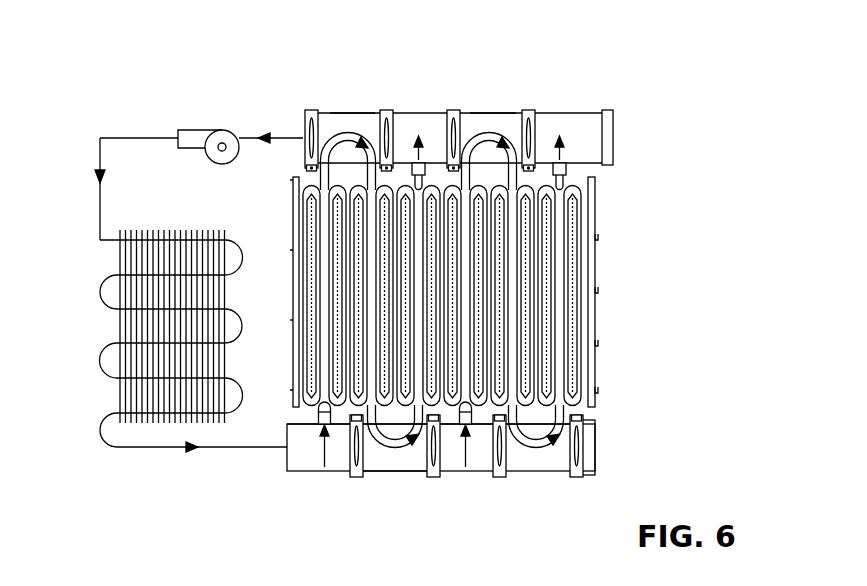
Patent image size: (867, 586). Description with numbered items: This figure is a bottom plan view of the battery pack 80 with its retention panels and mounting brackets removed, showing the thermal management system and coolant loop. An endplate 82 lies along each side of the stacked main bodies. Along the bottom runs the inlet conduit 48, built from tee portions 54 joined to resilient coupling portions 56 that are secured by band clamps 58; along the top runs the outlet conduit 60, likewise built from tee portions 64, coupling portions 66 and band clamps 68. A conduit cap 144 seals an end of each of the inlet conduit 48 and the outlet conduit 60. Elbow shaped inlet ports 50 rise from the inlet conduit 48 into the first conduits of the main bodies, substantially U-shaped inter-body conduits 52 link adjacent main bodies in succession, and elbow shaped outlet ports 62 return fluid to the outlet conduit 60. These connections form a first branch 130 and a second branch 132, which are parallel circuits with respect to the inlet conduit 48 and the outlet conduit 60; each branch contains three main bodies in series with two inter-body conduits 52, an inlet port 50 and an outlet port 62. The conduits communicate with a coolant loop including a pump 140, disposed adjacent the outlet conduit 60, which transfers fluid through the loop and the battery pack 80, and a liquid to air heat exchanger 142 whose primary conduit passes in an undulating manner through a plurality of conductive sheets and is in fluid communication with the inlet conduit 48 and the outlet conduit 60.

The inlet conduit 48 is at (292, 455).
The inlet port 50 is at (318, 408).
The inter-body conduit 52 is at (345, 140).
The tee portion 54 is at (316, 472).
The coupling portion 56 is at (406, 472).
The band clamp 58 is at (355, 477).
The outlet conduit 60 is at (592, 117).
The outlet port 62 is at (412, 164).
The tee portion 64 is at (388, 110).
The coupling portion 66 is at (362, 113).
The band clamp 68 is at (308, 110).
The battery pack 80 is at (476, 276).
The endplate 82 is at (292, 216).
The first branch 130 is at (300, 66).
The second branch 132 is at (590, 66).
The pump 140 is at (210, 130).
The heat exchanger 142 is at (100, 290).
The conduit cap 144 is at (613, 135).